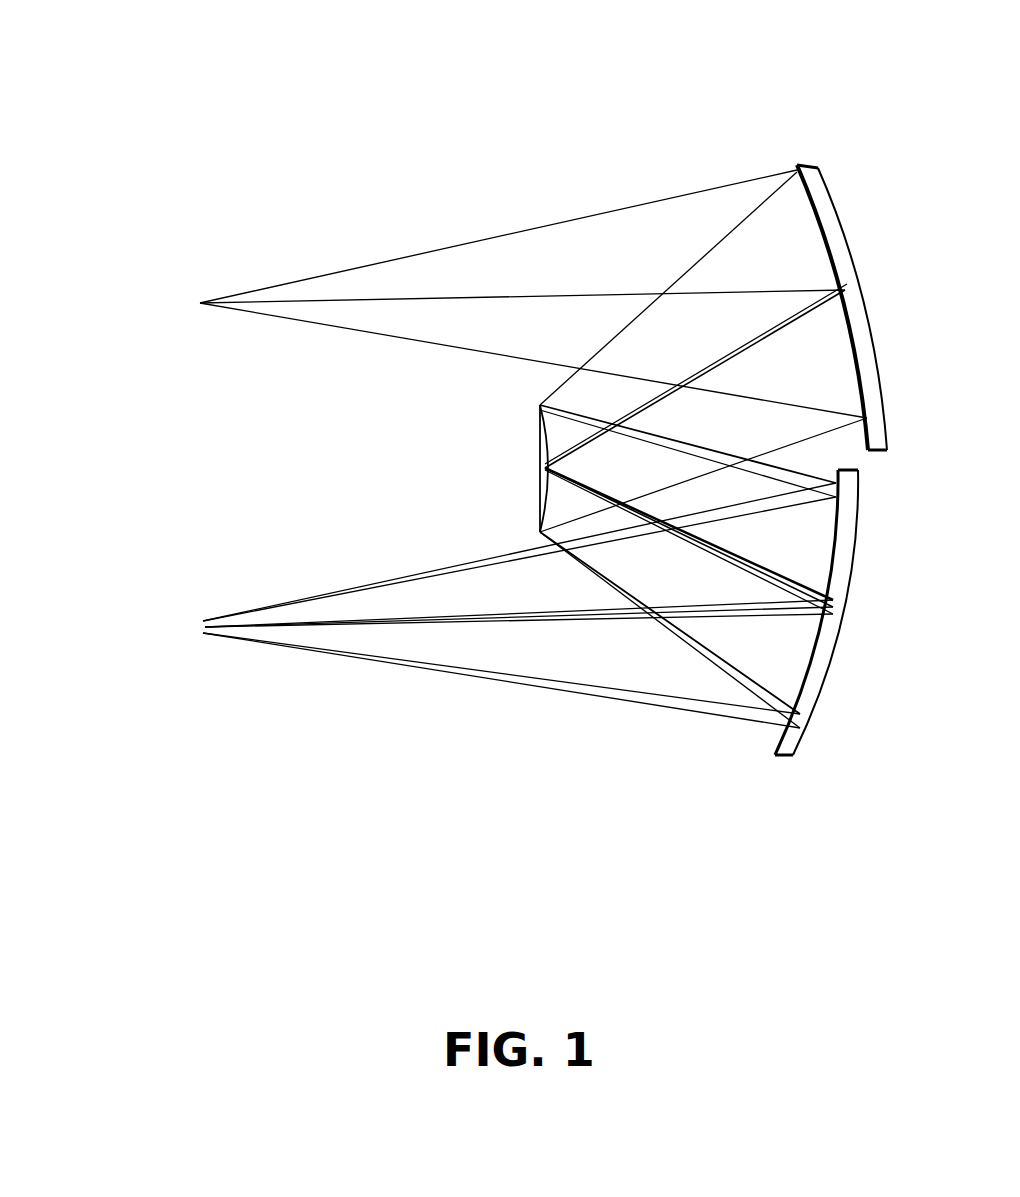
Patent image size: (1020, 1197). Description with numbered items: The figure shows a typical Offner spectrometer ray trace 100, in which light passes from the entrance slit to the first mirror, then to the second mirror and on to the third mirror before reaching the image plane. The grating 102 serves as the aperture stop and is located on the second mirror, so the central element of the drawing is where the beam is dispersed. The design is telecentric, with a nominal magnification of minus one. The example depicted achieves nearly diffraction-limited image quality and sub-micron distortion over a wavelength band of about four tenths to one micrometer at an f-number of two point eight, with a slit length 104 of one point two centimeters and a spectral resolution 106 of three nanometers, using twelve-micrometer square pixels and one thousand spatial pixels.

The Offner spectrometer ray trace 100 is at (724, 99).
The grating 102 is at (504, 434).
The slit length 104 is at (187, 280).
The spectral resolution 106 is at (165, 615).